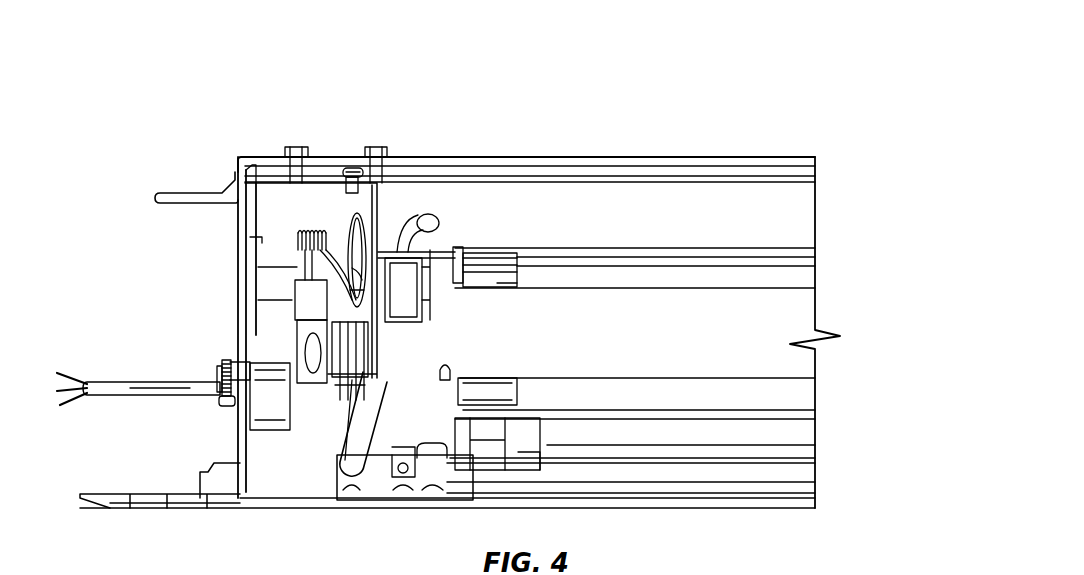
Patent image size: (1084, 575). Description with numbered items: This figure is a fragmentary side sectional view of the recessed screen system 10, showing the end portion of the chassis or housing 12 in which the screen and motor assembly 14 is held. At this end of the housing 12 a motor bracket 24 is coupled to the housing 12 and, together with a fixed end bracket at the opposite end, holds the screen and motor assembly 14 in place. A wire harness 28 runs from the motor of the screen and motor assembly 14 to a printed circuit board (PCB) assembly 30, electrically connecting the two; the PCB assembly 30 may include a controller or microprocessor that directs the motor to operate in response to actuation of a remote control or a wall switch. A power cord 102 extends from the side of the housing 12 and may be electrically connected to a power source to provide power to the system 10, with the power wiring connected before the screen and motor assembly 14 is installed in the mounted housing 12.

The recessed screen system 10 is at (670, 55).
The housing 12 is at (725, 147).
The screen and motor assembly 14 is at (453, 228).
The motor bracket 24 is at (373, 215).
The wire harness 28 is at (368, 468).
The PCB assembly 30 is at (320, 392).
The power cord 102 is at (144, 358).